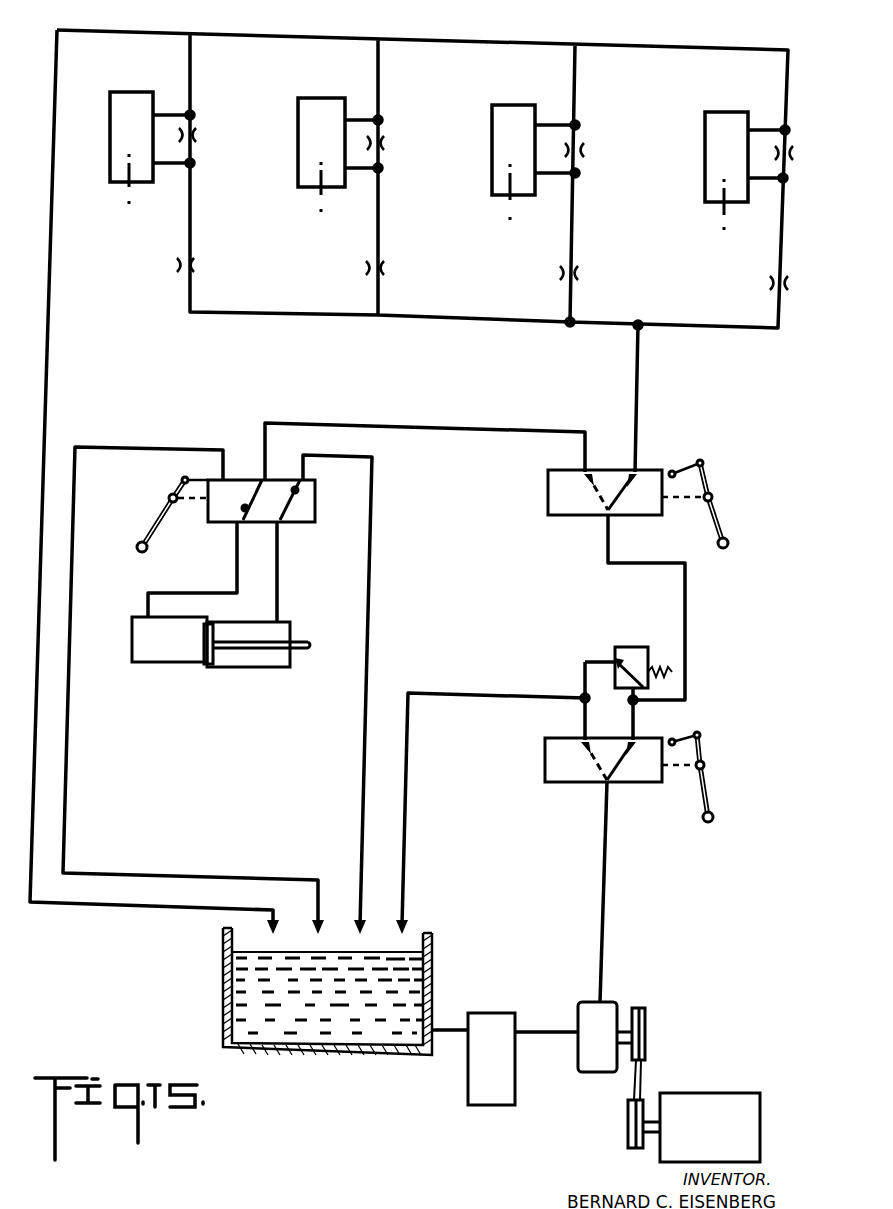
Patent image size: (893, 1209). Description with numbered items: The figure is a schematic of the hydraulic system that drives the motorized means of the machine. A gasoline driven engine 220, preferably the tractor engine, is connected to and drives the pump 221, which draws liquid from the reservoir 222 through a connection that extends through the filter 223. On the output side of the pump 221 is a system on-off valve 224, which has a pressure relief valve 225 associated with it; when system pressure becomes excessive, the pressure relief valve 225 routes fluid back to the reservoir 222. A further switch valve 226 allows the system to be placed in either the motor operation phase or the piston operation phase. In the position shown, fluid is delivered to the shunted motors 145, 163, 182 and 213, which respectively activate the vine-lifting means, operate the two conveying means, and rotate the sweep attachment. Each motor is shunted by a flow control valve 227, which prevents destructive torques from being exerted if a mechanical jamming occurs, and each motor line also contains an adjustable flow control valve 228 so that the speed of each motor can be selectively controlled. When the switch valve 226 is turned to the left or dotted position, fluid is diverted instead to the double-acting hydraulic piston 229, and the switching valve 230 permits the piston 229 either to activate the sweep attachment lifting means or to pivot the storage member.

The motor 213 is at (112, 136).
The motor 182 is at (298, 167).
The motor 163 is at (492, 170).
The motor 145 is at (705, 160).
The flow control valve 227 is at (204, 139).
The adjustable flow control valve 228 is at (203, 269).
The switching valve 230 is at (215, 522).
The double-acting hydraulic piston 229 is at (160, 653).
The switch valve 226 is at (563, 507).
The pressure relief valve 225 is at (635, 647).
The system on-off valve 224 is at (570, 783).
The reservoir 222 is at (292, 1057).
The filter 223 is at (473, 1098).
The pump 221 is at (583, 1005).
The gasoline driven engine 220 is at (732, 1110).